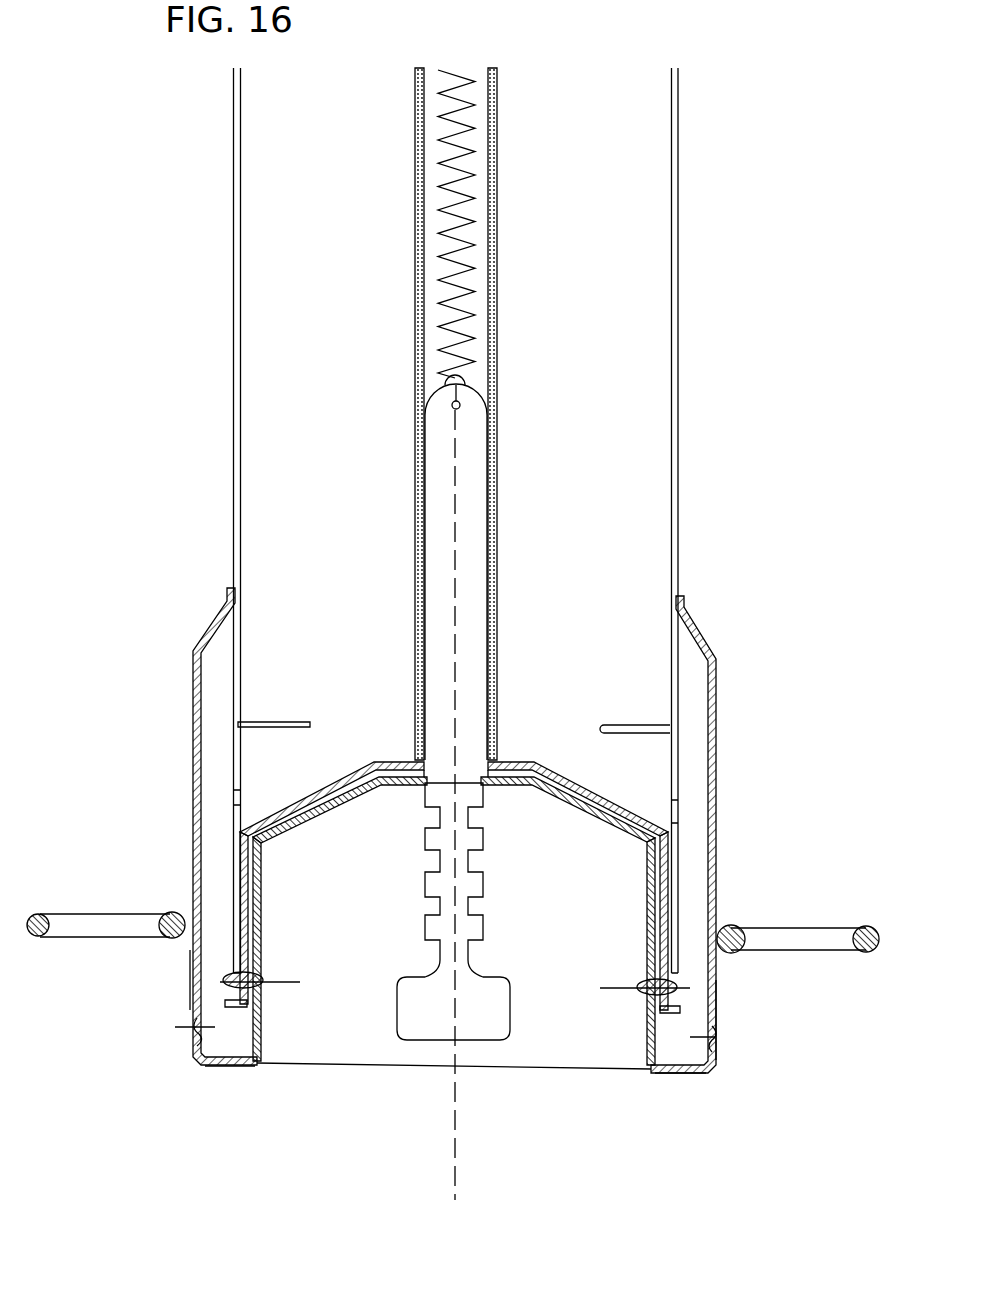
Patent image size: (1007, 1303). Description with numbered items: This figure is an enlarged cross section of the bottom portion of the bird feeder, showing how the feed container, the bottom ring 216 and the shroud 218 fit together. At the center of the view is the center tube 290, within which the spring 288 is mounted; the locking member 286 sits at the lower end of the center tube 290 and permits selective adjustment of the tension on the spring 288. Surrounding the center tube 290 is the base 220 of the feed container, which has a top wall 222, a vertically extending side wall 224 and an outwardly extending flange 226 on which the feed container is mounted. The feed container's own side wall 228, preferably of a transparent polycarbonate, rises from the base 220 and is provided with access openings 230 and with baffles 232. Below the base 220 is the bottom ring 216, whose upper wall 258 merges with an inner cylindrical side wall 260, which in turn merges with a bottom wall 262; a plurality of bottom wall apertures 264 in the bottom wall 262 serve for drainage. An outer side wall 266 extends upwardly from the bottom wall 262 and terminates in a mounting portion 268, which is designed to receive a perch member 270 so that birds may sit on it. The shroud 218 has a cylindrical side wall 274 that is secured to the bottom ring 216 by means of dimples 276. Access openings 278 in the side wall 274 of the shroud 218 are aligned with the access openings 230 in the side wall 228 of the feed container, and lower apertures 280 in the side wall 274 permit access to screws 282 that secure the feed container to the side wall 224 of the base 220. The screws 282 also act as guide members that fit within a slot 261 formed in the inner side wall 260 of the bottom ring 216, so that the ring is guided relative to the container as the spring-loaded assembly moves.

The bottom ring 216 is at (320, 1024).
The shroud 218 is at (160, 815).
The base 220 is at (350, 745).
The top wall 222 is at (540, 768).
The side wall 224 is at (650, 878).
The flange 226 is at (668, 1015).
The side wall 228 is at (680, 445).
The access openings 230 is at (680, 772).
The baffles 232 is at (635, 725).
The upper wall 258 is at (570, 805).
The inner cylindrical side wall 260 is at (648, 1010).
The slot 261 is at (265, 898).
The bottom wall 262 is at (707, 1076).
The bottom wall apertures 264 is at (212, 1074).
The outer side wall 266 is at (718, 1013).
The mounting portion 268 is at (725, 928).
The perch member 270 is at (862, 925).
The cylindrical side wall 274 is at (193, 868).
The dimples 276 is at (178, 1032).
The access openings 278 is at (717, 733).
The lower apertures 280 is at (175, 985).
The screws 282 is at (268, 978).
The locking member 286 is at (424, 852).
The spring 288 is at (483, 188).
The center tube 290 is at (497, 435).